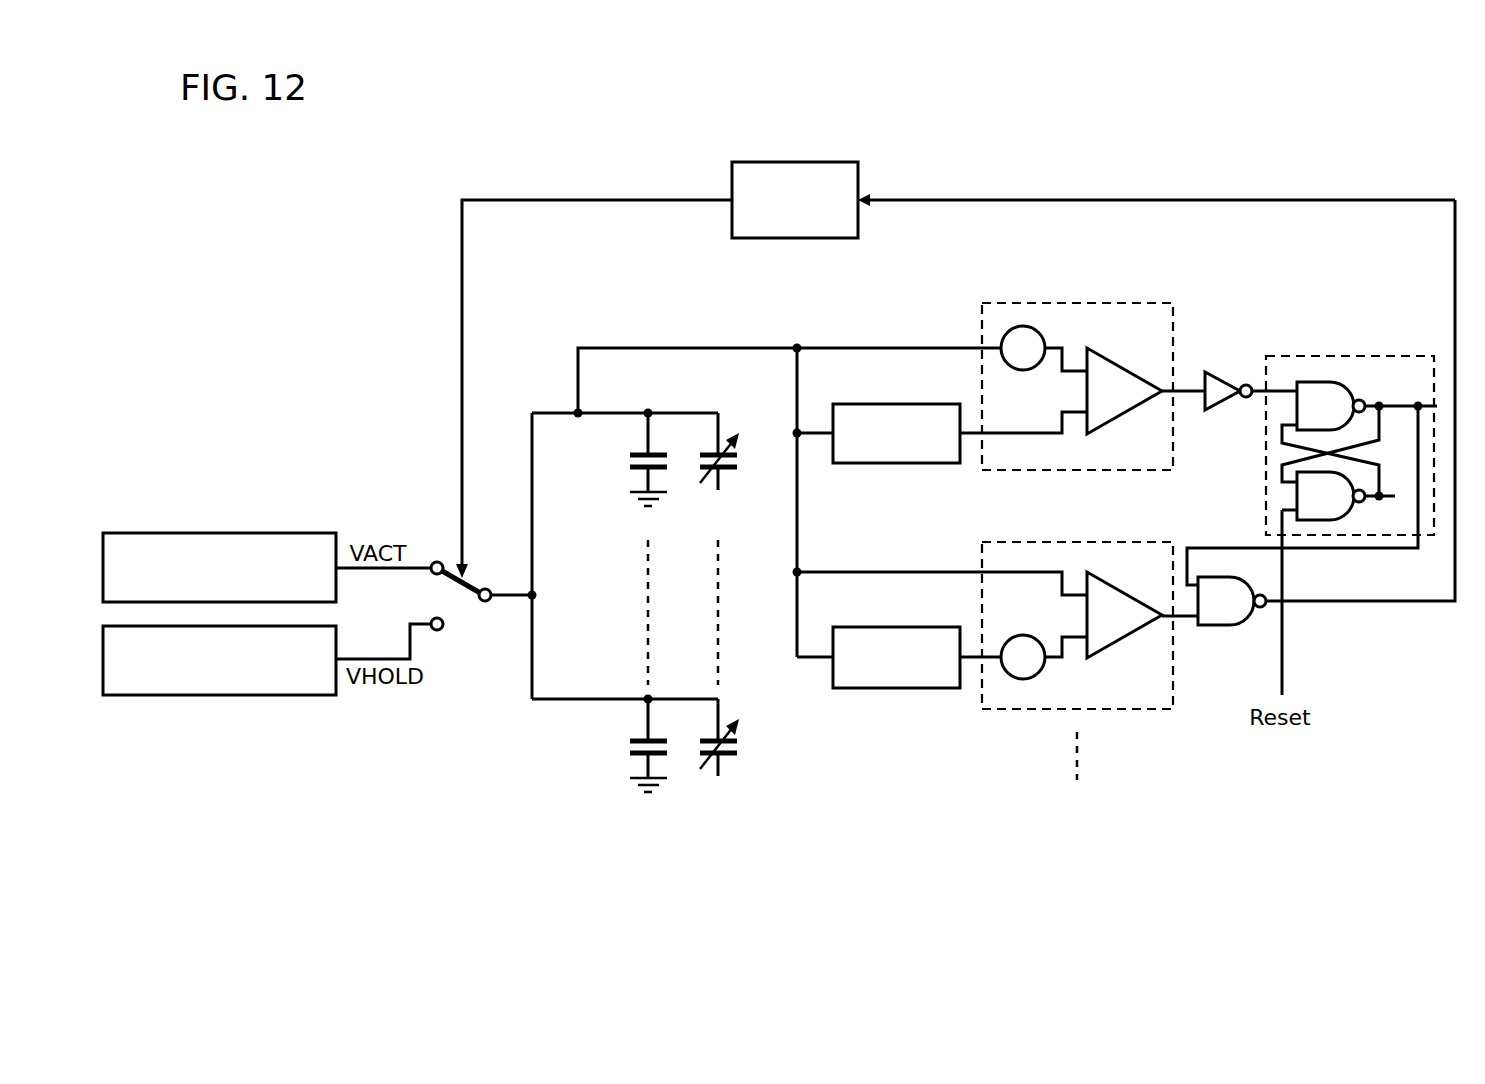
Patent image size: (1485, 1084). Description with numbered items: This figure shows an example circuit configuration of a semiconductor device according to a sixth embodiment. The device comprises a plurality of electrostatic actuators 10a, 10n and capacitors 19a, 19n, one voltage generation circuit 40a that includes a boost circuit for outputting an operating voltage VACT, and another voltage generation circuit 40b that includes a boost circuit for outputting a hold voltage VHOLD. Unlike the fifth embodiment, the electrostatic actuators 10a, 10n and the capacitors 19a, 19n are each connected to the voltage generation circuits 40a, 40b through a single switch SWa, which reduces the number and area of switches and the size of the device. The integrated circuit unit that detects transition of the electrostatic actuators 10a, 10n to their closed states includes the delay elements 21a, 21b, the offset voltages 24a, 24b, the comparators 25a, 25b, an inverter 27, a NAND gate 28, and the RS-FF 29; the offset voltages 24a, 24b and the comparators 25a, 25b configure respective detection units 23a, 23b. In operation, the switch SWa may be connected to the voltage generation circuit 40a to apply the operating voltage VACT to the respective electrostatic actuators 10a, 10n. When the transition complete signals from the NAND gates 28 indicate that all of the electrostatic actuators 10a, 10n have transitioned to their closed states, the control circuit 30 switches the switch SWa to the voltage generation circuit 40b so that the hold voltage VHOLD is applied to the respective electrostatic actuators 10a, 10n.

The control circuit 30 is at (794, 162).
The voltage generation circuit 40a is at (221, 533).
The voltage generation circuit 40b is at (221, 695).
The switch SWa is at (482, 564).
The capacitor 19a is at (620, 467).
The electrostatic actuator 10a is at (746, 467).
The capacitor 19n is at (620, 752).
The electrostatic actuator 10n is at (746, 752).
The delay element 21a is at (892, 463).
The delay element 21b is at (892, 688).
The detection unit 23a is at (1081, 303).
The detection unit 23b is at (1126, 710).
The offset voltage 24a is at (1023, 371).
The offset voltage 24b is at (1023, 635).
The comparator 25a is at (1124, 366).
The comparator 25b is at (1125, 640).
The inverter 27 is at (1222, 373).
The NAND gate 28 is at (1218, 625).
The RS-FF 29 is at (1354, 356).